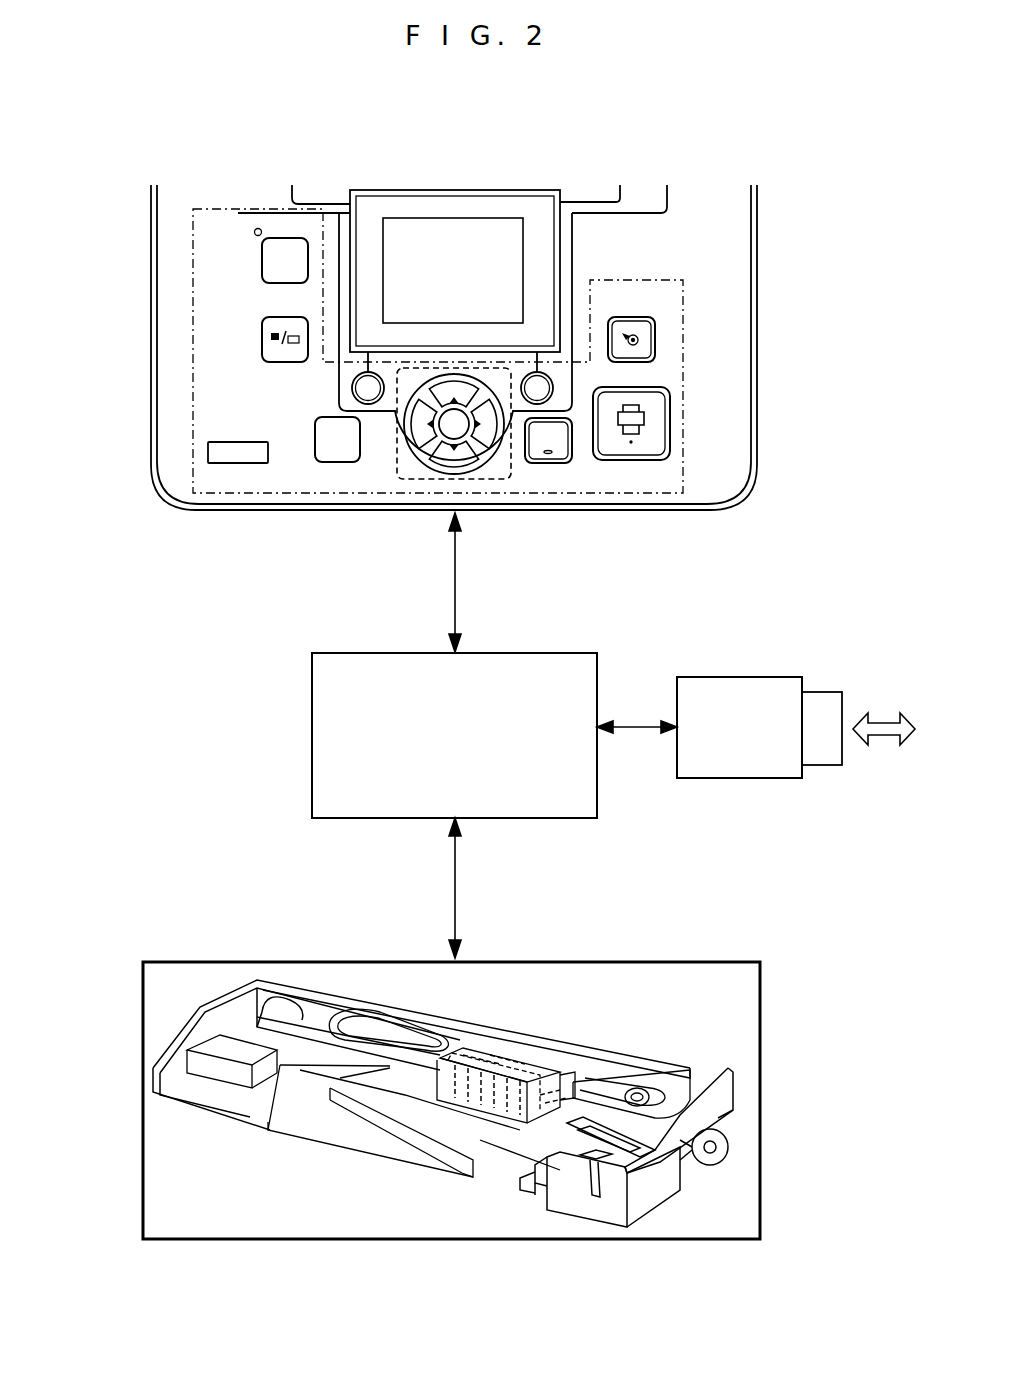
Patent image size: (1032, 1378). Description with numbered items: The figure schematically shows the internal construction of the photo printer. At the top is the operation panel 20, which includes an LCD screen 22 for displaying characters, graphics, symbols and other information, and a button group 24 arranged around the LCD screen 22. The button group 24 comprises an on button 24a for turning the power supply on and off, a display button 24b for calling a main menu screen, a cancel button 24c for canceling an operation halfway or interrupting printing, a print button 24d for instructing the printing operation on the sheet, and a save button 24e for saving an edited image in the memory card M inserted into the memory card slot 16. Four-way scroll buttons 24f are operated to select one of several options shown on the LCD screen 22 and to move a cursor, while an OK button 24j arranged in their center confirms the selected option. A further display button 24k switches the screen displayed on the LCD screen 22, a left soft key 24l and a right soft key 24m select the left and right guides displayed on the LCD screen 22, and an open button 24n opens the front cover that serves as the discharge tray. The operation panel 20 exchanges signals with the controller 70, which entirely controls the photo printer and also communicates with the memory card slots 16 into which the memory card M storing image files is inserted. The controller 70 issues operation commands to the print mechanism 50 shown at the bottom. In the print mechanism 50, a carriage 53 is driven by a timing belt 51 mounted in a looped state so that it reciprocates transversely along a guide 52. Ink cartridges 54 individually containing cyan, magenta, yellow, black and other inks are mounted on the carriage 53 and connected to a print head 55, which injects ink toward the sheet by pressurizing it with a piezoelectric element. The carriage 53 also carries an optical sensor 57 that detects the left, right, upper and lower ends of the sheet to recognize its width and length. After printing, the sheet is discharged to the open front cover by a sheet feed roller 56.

The operation panel 20 is at (454, 347).
The LCD screen 22 is at (455, 271).
The button group 24 is at (683, 293).
The on button 24a is at (263, 247).
The display button 24b is at (315, 433).
The cancel button 24c is at (567, 458).
The print button 24d is at (653, 440).
The save button 24e is at (642, 325).
The 4-way scroll buttons 24f is at (508, 480).
The OK button 24j is at (440, 432).
The display button 24k is at (263, 327).
The left soft key 24l is at (353, 386).
The right soft key 24m is at (552, 385).
The open button 24n is at (208, 451).
The controller 70 is at (312, 737).
The memory card slots 16 is at (722, 677).
The memory card M is at (822, 692).
The print mechanism 50 is at (762, 985).
The timing belt 51 is at (633, 1093).
The guide 52 is at (297, 1042).
The carriage 53 is at (422, 1158).
The ink cartridges 54 is at (493, 1060).
The print head 55 is at (460, 1173).
The sheet feed roller 56 is at (307, 1075).
The optical sensor 57 is at (575, 1080).